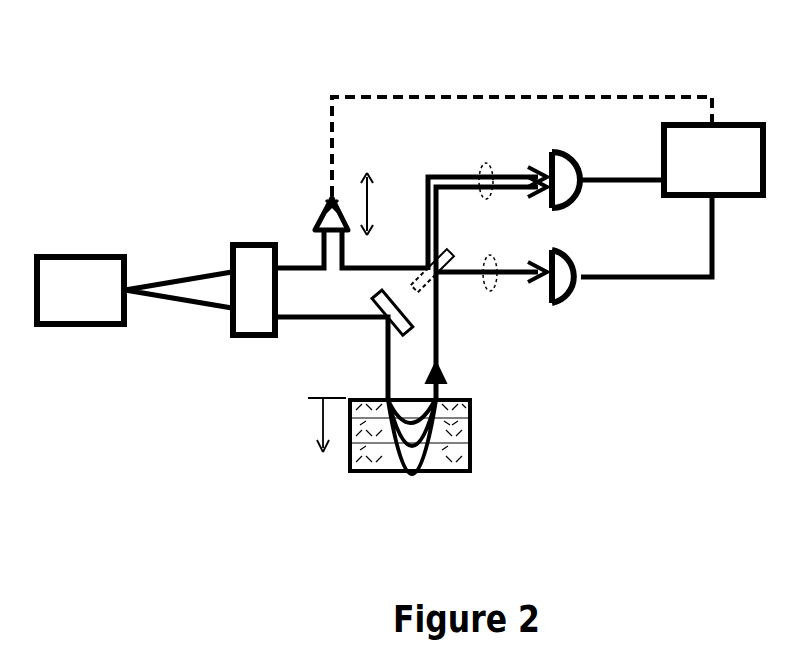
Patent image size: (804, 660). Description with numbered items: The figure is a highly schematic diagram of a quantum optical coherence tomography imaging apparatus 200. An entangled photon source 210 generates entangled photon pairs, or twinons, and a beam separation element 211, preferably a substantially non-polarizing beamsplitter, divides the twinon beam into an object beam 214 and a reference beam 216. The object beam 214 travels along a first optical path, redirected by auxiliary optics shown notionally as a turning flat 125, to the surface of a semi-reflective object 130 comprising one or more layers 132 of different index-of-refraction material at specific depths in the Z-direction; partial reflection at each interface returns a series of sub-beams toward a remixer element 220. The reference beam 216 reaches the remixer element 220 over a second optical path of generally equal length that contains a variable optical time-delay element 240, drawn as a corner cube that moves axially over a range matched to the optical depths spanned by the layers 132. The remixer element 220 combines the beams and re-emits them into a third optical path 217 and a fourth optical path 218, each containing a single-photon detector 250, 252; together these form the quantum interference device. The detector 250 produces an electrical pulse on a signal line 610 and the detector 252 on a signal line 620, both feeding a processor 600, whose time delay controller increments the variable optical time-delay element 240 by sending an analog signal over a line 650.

The QOCT apparatus 200 is at (232, 151).
The entangled photon source 210 is at (92, 333).
The beam separation element 211 is at (243, 343).
The object beam 214 is at (328, 321).
The reference beam 216 is at (298, 268).
The variable optical time-delay element 240 is at (321, 226).
The line 650 is at (553, 86).
The turning flat 125 is at (376, 299).
The third optical path 217 is at (484, 165).
The fourth optical path 218 is at (491, 291).
The remixer element 220 is at (452, 256).
The optical detector 250 is at (582, 162).
The optical detector 252 is at (580, 297).
The signal line 610 is at (607, 190).
The signal line 620 is at (646, 281).
The processor 600 is at (736, 123).
The object 130 is at (456, 451).
The layers 132 is at (477, 445).